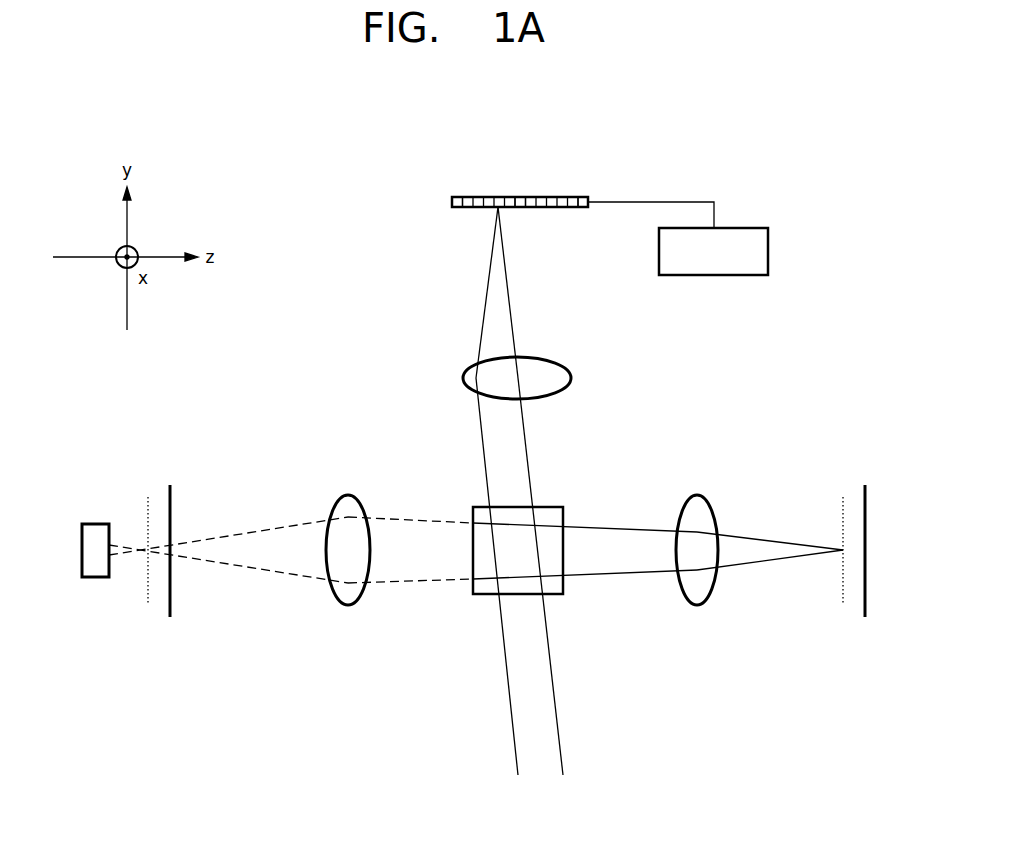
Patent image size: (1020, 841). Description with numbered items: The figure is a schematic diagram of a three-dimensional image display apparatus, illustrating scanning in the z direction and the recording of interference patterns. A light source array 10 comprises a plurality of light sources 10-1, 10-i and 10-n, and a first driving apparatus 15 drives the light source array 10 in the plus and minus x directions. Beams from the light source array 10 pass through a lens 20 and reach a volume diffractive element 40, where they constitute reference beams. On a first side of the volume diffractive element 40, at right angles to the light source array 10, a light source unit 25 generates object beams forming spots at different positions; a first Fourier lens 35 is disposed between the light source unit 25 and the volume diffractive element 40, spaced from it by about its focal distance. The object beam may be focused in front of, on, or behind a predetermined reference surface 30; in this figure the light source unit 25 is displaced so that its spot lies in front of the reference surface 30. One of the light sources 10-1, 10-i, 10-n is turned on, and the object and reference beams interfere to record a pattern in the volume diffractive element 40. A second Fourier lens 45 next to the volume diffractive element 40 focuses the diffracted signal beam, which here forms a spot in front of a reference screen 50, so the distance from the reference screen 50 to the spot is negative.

The light source array 10 is at (453, 216).
The light source 10-1 is at (457, 197).
The light source 10-i is at (520, 197).
The light source 10-n is at (582, 197).
The first driving apparatus 15 is at (768, 252).
The lens 20 is at (572, 378).
The light source unit 25 is at (94, 524).
The reference surface 30 is at (172, 485).
The first Fourier lens 35 is at (349, 495).
The volume diffractive element 40 is at (555, 507).
The second Fourier lens 45 is at (697, 495).
The reference screen 50 is at (867, 485).